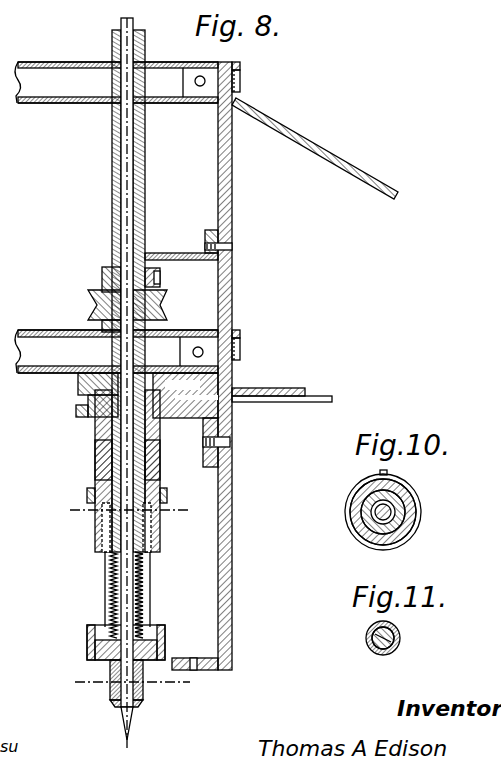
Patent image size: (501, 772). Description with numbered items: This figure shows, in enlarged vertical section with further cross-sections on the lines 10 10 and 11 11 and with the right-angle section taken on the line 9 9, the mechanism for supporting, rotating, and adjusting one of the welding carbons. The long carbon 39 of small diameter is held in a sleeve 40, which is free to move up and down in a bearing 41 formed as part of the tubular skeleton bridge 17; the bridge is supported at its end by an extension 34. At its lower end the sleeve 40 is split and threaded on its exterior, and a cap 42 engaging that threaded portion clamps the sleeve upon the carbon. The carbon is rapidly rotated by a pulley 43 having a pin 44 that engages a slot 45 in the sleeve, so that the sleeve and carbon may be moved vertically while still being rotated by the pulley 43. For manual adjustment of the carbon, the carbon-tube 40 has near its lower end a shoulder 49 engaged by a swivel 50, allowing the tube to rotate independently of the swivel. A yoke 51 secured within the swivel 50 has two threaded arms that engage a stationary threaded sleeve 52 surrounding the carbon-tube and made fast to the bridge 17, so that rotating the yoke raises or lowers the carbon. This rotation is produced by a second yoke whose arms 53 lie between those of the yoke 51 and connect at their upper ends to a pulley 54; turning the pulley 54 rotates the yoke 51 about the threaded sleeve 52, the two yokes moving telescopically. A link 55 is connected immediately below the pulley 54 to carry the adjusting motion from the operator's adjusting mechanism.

In FIG. 8, the section line 9 9 is at (125, 395).
In FIG. 8, the section line 10 10 is at (125, 510).
In FIG. 8, the section line 11 11 is at (129, 682).
In FIG. 8, the bridge 17 is at (192, 366).
In FIG. 8, the extension 34 is at (350, 160).
In FIG. 8, the carbon 39 is at (134, 24).
In FIG. 10, the carbon 39 is at (392, 515).
In FIG. 11, the carbon 39 is at (398, 628).
In FIG. 8, the sleeve 40 is at (146, 48).
In FIG. 10, the sleeve 40 is at (373, 518).
In FIG. 11, the sleeve 40 is at (374, 652).
In FIG. 8, the bearing 41 is at (147, 150).
In FIG. 11, the cap 42 is at (393, 648).
In FIG. 8, the pulley 43 is at (162, 305).
In FIG. 8, the pin 44 is at (160, 278).
In FIG. 8, the slot 45 is at (150, 327).
In FIG. 8, the shoulder 49 is at (88, 652).
In FIG. 8, the swivel 50 is at (165, 640).
In FIG. 8, the yoke 51 is at (150, 585).
In FIG. 10, the yoke 51 is at (352, 508).
In FIG. 8, the stationary threaded sleeve 52 is at (95, 452).
In FIG. 8, the arms of second yoke 53 is at (95, 462).
In FIG. 10, the arms of second yoke 53 is at (408, 500).
In FIG. 8, the pulley 54 is at (85, 378).
In FIG. 8, the link 55 is at (325, 403).